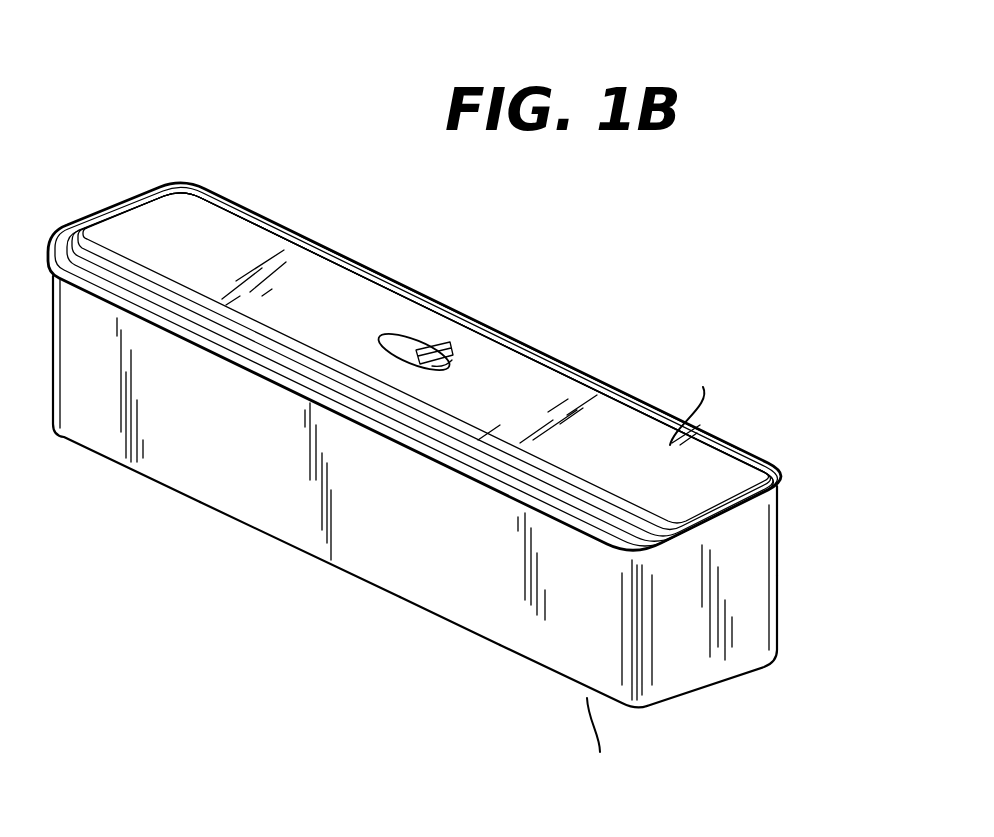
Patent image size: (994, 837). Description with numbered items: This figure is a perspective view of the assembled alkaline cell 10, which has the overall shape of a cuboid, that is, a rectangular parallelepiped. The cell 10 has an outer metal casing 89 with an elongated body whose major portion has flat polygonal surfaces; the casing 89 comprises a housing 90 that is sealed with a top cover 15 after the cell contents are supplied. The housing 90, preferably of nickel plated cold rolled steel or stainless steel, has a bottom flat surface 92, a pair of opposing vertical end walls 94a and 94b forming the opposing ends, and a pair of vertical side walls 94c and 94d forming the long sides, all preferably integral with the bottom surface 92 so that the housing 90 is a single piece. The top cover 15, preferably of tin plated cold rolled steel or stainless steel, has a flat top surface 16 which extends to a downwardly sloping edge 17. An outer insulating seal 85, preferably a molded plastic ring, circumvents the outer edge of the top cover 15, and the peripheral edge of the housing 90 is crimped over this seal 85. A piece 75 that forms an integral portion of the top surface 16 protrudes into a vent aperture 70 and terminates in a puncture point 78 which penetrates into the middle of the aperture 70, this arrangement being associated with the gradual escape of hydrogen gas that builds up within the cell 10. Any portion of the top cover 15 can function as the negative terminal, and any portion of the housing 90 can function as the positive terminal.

The alkaline cell 10 is at (182, 104).
The top cover 15 is at (238, 238).
The flat top surface 16 is at (353, 290).
The downwardly sloping edge 17 is at (760, 464).
The vent aperture 70 is at (409, 345).
The protruding piece 75 is at (431, 352).
The puncture point 78 is at (436, 364).
The outer insulating seal 85 is at (745, 512).
The outer metal casing 89 is at (433, 590).
The housing 90 is at (513, 640).
The bottom flat surface 92 is at (363, 583).
The vertical end wall 94a is at (745, 596).
The vertical end wall 94b is at (113, 208).
The vertical side wall 94c is at (168, 460).
The vertical side wall 94d is at (627, 396).